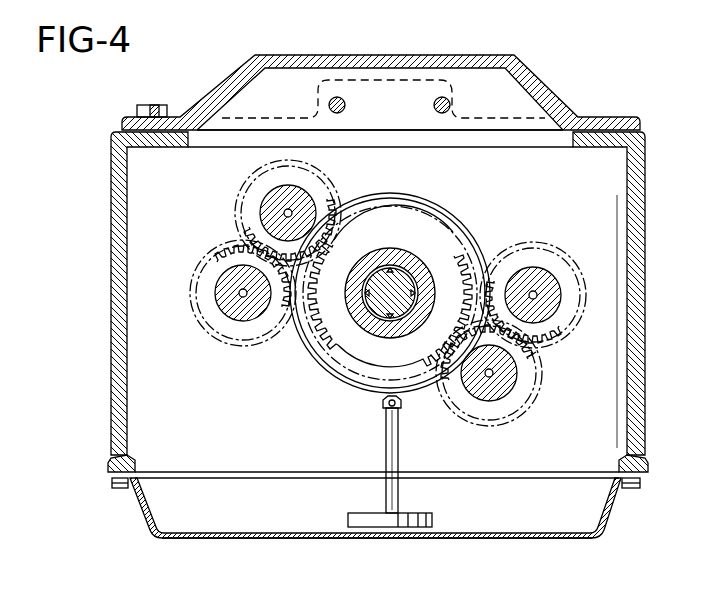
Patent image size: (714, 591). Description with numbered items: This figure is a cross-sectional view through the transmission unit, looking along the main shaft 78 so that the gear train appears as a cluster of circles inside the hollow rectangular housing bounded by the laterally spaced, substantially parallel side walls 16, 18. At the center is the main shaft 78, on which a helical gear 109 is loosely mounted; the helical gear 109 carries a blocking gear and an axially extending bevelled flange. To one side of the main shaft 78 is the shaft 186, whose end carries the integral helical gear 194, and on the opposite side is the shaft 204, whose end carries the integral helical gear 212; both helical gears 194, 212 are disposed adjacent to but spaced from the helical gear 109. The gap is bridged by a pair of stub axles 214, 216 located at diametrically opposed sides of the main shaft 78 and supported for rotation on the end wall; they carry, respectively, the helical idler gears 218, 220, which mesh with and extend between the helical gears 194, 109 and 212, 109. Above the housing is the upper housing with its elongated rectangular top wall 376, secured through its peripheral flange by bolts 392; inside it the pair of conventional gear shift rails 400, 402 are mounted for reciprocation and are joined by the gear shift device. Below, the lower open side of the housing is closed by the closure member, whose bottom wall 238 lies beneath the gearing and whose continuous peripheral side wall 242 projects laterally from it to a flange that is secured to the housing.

The side wall 16 is at (112, 340).
The side wall 18 is at (645, 369).
The top wall 376 is at (430, 55).
The bolt 392 is at (158, 104).
The gear shift rail 400 is at (346, 107).
The gear shift rail 402 is at (441, 113).
The stub axle 214 is at (268, 203).
The helical idler gear 218 is at (335, 193).
The helical gear 194 is at (228, 250).
The shaft 186 is at (222, 296).
The helical gear 109 is at (362, 215).
The main shaft 78 is at (417, 260).
The shaft 204 is at (547, 267).
The helical gear 212 is at (567, 327).
The helical idler gear 220 is at (530, 354).
The stub axle 216 is at (517, 382).
The peripheral side wall 242 is at (152, 507).
The bottom wall 238 is at (515, 540).